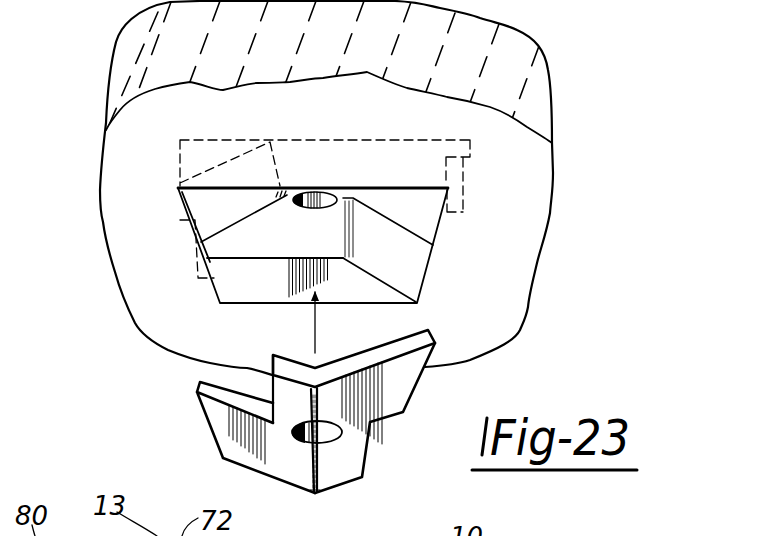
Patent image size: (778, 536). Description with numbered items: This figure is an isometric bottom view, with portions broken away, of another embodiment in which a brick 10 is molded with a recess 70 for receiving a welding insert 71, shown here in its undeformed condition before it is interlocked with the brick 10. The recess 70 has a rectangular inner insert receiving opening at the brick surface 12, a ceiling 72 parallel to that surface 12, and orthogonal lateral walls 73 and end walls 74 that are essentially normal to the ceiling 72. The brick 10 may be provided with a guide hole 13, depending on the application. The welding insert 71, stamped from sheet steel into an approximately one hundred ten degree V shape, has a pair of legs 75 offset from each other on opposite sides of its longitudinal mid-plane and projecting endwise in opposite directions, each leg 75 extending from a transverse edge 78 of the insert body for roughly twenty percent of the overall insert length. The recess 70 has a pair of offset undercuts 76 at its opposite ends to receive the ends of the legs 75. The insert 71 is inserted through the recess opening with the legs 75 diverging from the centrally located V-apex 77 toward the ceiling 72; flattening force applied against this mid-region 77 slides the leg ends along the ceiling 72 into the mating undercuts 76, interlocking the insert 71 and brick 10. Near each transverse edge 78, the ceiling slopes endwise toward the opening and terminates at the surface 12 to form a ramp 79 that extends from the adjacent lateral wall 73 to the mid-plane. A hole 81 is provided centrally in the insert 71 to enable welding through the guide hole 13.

The brick 10 is at (567, 70).
The brick surface 12 is at (505, 303).
The guide hole 13 is at (312, 206).
The recess 70 is at (248, 289).
The welding insert 71 is at (347, 488).
The ceiling 72 is at (268, 247).
The lateral walls 73 is at (364, 288).
The end walls 74 is at (417, 186).
The legs 75 is at (220, 425).
The undercuts 76 is at (446, 179).
The V-apex 77 is at (318, 471).
The transverse edge 78 is at (262, 389).
The ramp 79 is at (195, 199).
The hole 81 is at (420, 222).